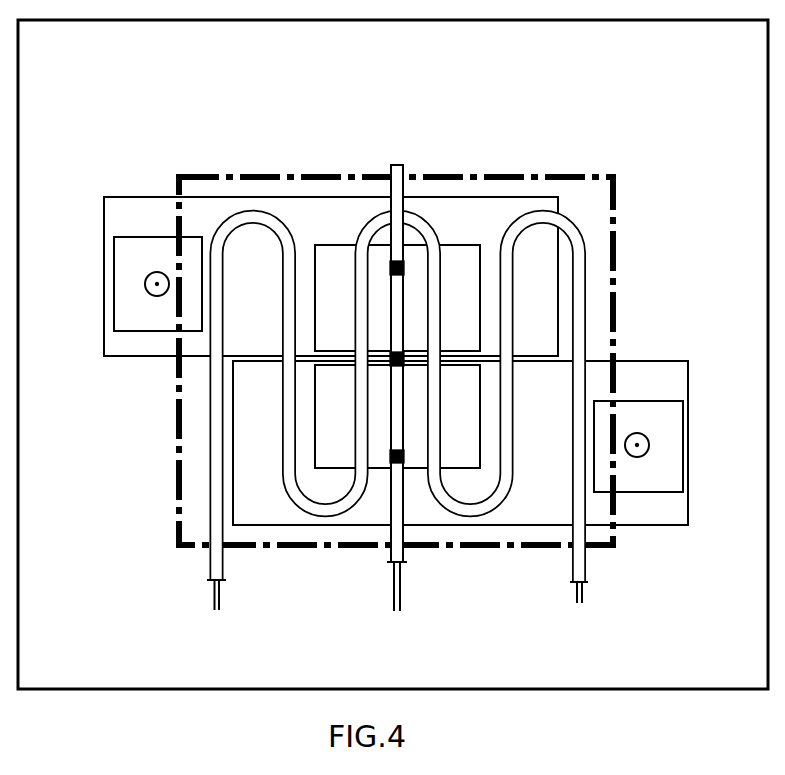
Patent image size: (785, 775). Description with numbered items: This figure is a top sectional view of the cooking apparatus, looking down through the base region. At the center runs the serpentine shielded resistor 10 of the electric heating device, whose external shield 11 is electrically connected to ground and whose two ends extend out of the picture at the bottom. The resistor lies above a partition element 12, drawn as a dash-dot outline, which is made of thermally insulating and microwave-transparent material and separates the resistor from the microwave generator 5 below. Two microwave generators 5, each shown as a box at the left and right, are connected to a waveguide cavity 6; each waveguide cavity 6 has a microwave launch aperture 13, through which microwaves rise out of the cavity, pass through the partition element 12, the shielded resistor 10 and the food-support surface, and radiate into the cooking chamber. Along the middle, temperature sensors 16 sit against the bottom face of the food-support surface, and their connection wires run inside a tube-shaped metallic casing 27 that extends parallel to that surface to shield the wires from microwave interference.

The microwave generator 5 is at (130, 263).
The waveguide cavity 6 is at (300, 222).
The shielded resistor 10 is at (572, 216).
The external shield 11 is at (583, 293).
The partition element 12 is at (190, 176).
The microwave launch aperture 13 is at (456, 268).
The temperature sensors 16 is at (394, 262).
The metallic casing 27 is at (399, 163).